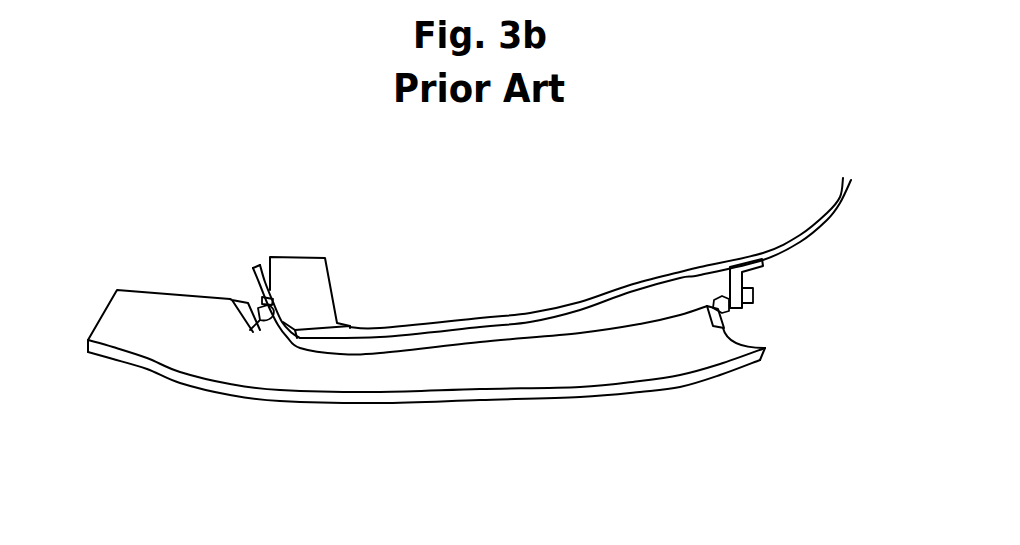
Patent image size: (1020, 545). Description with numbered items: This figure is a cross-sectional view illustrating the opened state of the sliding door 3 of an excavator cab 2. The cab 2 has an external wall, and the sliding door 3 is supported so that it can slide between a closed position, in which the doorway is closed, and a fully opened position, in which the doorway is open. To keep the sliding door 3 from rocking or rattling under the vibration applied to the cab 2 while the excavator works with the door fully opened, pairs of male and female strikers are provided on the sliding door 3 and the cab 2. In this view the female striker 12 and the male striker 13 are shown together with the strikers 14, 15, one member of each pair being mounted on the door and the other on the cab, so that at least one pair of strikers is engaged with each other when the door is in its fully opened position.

The cab 2 is at (798, 235).
The sliding door 3 is at (583, 393).
The female striker 12 is at (257, 269).
The male striker 13 is at (262, 318).
The striker 14 is at (723, 320).
The striker 15 is at (718, 300).